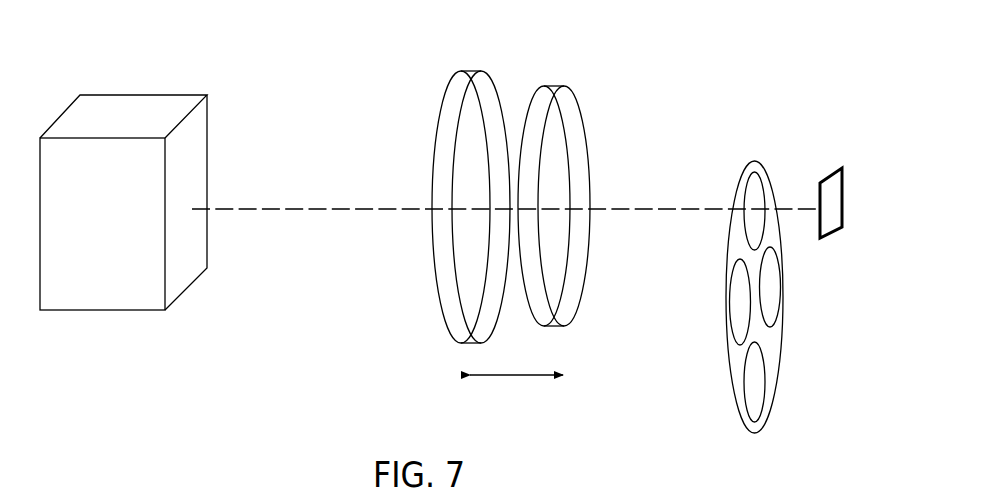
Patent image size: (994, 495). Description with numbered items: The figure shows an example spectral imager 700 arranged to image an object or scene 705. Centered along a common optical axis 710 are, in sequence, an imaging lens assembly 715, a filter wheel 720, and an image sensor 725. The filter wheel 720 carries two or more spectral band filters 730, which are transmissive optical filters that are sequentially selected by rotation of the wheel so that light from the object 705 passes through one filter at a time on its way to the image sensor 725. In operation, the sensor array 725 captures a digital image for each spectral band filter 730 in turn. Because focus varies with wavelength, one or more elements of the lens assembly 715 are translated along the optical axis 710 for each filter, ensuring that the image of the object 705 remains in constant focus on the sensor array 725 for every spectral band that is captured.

The spectral imager 700 is at (845, 81).
The object 705 is at (113, 310).
The optical axis 710 is at (275, 210).
The imaging lens assembly 715 is at (543, 85).
The filter wheel 720 is at (732, 382).
The image sensor 725 is at (842, 202).
The spectral band filters 730 is at (748, 193).